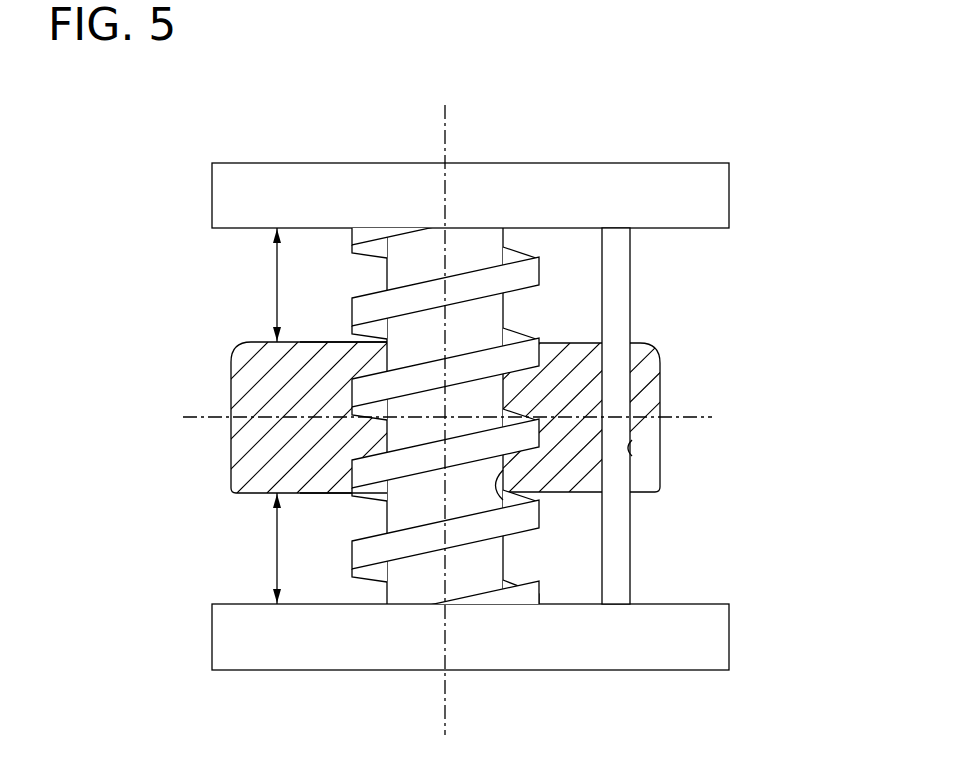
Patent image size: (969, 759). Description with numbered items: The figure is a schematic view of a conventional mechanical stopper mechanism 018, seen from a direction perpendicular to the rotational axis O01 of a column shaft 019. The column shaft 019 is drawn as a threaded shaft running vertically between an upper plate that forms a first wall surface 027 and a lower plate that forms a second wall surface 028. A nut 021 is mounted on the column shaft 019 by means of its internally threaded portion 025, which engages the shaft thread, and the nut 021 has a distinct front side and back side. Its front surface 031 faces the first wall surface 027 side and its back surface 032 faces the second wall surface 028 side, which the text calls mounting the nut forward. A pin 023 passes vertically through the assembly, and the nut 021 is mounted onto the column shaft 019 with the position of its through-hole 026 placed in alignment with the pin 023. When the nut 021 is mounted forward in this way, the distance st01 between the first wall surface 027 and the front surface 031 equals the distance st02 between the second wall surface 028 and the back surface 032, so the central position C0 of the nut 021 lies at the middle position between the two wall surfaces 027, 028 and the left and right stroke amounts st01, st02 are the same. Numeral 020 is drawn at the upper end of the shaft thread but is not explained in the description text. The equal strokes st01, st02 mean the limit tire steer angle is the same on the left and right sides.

The mechanical stopper mechanism 018 is at (772, 182).
The column shaft 019 is at (529, 413).
The spring end portion 020 is at (542, 272).
The nut 021 is at (224, 370).
The pin 023 is at (618, 318).
The internally threaded portion 025 is at (545, 503).
The through-hole 026 is at (632, 456).
The first wall surface 027 is at (230, 229).
The second wall surface 028 is at (232, 604).
The front surface 031 is at (330, 340).
The back surface 032 is at (318, 495).
The central position C0 is at (190, 414).
The rotational axis O01 is at (440, 690).
The distance between first wall surface and front surface st01 is at (252, 285).
The distance between second wall surface and back surface st02 is at (253, 548).